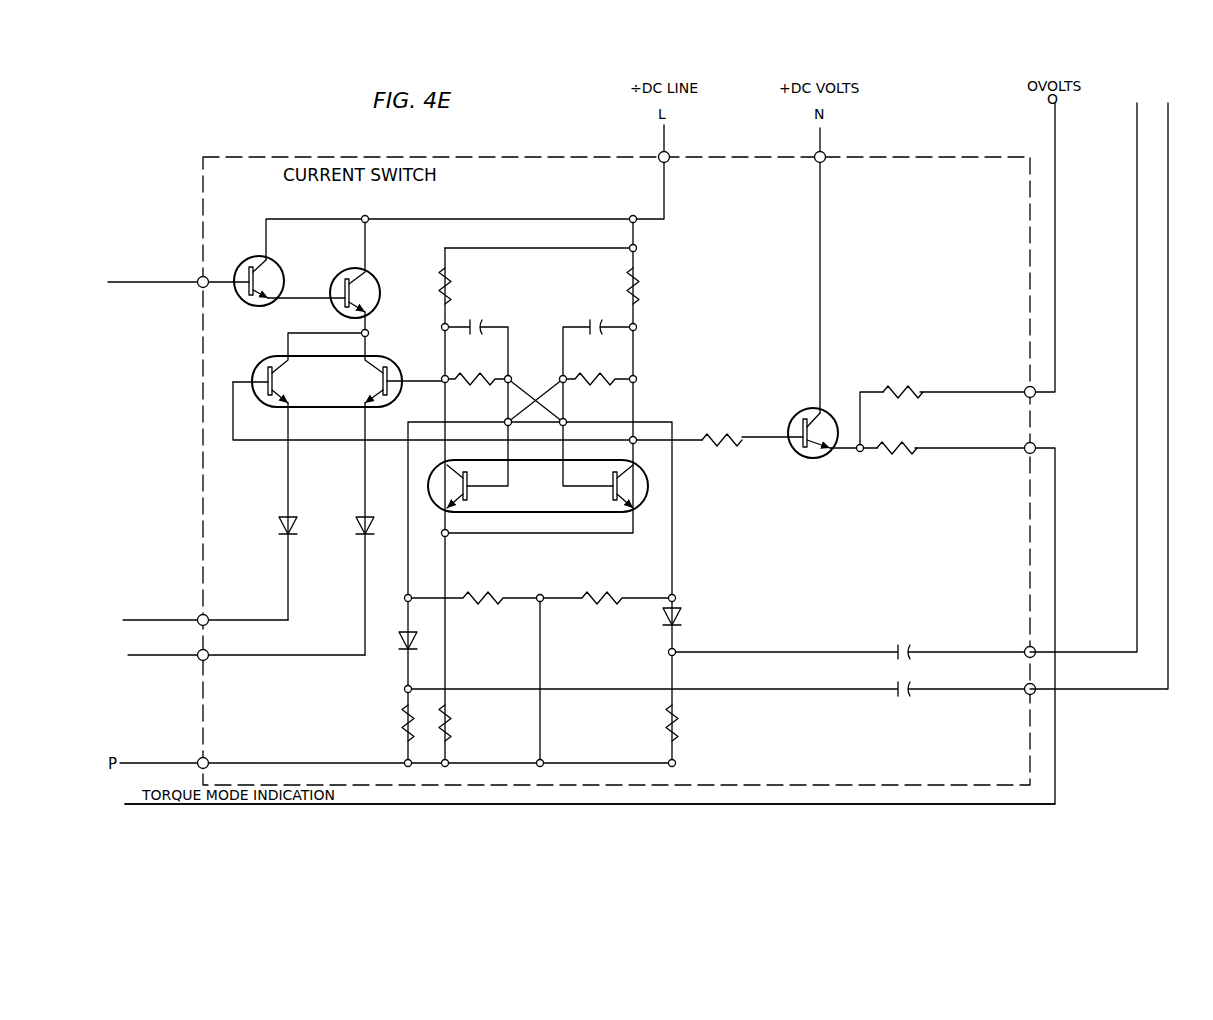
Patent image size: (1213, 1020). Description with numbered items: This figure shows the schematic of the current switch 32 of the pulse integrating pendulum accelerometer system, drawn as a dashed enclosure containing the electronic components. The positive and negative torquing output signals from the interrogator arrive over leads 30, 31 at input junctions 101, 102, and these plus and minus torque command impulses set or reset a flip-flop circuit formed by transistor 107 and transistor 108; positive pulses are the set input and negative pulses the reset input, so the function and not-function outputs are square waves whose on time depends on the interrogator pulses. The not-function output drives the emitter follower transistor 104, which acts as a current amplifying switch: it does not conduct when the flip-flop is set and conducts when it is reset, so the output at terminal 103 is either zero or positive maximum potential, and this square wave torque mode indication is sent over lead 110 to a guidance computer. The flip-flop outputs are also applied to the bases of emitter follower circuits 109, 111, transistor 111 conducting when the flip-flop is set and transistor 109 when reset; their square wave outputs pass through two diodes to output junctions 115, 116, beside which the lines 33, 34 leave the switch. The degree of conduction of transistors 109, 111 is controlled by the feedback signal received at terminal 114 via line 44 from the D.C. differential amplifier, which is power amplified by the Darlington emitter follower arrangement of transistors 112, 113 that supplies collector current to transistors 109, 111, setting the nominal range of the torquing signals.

The lead 30 is at (1168, 133).
The lead 31 is at (1137, 133).
The current switch 32 is at (485, 157).
The input line 33 is at (135, 620).
The input line 34 is at (135, 655).
The line 44 is at (117, 277).
The input junction 101 is at (1036, 692).
The input junction 102 is at (1036, 648).
The output terminal 103 is at (1036, 444).
The transistor 104 is at (806, 419).
The transistor 107 is at (635, 480).
The transistor 108 is at (448, 472).
The emitter follower circuit 109 is at (388, 371).
The electrical lead 110 is at (745, 808).
The emitter follower circuit 111 is at (263, 366).
The transistor 112 is at (346, 273).
The transistor 113 is at (250, 263).
The terminal 114 is at (197, 278).
The output junction 115 is at (210, 616).
The output junction 116 is at (210, 652).